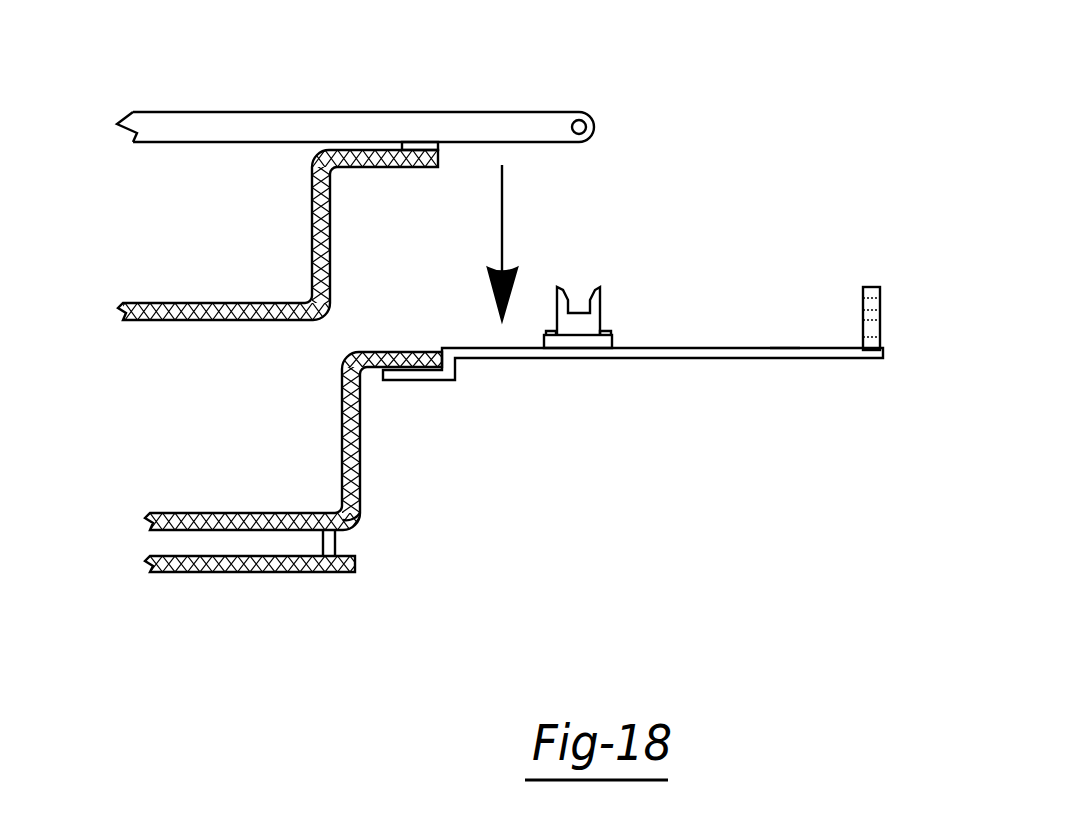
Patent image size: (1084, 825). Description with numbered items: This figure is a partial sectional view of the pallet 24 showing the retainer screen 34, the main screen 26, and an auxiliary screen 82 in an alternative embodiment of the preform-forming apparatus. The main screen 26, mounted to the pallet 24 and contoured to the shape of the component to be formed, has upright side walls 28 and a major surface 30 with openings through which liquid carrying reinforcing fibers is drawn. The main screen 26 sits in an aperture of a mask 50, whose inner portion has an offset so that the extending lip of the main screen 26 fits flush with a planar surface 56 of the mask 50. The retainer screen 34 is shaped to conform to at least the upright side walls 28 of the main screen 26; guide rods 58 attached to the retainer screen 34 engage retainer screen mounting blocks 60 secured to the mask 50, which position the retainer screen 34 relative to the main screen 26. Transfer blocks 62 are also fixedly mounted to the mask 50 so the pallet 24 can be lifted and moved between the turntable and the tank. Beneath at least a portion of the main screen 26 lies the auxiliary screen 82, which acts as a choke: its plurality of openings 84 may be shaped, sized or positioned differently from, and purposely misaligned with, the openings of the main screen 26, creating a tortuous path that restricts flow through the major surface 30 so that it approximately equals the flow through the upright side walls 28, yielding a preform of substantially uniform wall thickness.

The pallet 24 is at (612, 482).
The main screen 26 is at (357, 522).
The upright side walls 28 is at (277, 441).
The major surface 30 is at (208, 513).
The retainer screen 34 is at (182, 312).
The mask 50 is at (635, 398).
The planar surface 56 is at (780, 350).
The guide rods 58 is at (582, 120).
The retainer screen mounting blocks 60 is at (592, 323).
The transfer blocks 62 is at (880, 297).
The auxiliary screen 82 is at (352, 565).
The plurality of openings 84 is at (245, 563).